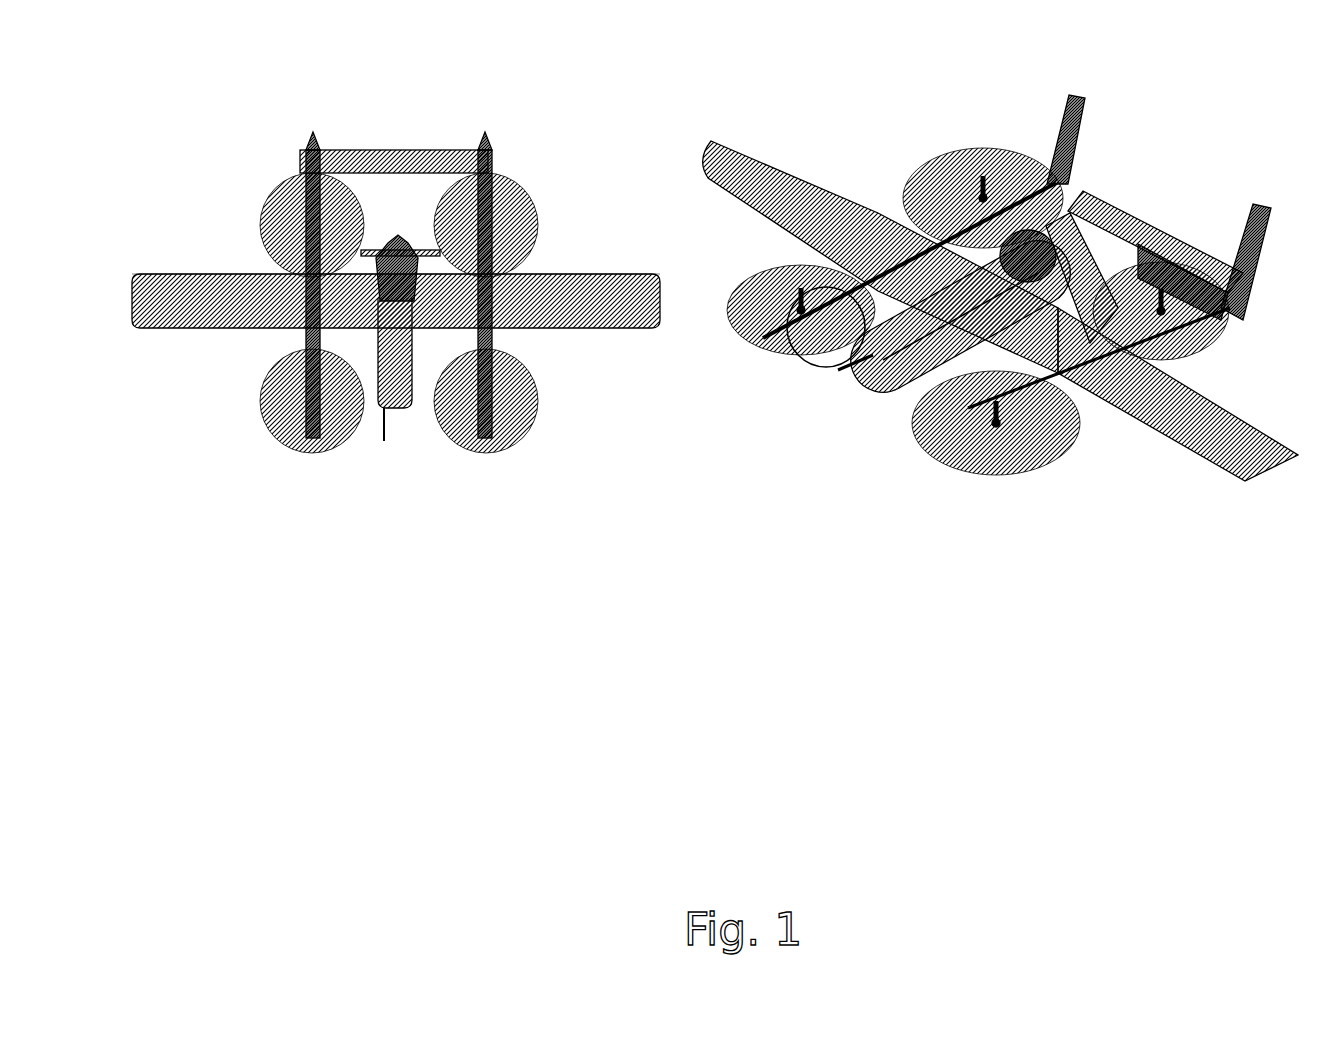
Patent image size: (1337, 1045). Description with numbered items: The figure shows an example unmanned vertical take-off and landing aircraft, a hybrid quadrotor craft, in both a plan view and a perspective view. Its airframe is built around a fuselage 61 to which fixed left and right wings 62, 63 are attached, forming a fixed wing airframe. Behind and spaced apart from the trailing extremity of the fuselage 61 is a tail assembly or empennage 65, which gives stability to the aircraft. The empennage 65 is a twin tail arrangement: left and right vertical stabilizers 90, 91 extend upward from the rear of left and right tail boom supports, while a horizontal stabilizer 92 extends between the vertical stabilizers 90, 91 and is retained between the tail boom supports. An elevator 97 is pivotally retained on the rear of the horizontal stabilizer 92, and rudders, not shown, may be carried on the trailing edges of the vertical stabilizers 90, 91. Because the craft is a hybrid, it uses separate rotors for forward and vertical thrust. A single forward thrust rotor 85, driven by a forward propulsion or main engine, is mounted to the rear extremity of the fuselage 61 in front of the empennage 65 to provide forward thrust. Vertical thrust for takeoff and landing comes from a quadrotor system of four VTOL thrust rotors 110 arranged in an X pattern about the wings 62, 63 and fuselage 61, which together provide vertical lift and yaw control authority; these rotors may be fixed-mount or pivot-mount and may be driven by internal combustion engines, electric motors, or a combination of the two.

The fuselage 61 is at (384, 401).
The left wing 62 is at (583, 281).
The right wing 63 is at (164, 277).
The empennage 65 is at (459, 94).
The forward thrust rotor 85 is at (374, 246).
The left vertical stabilizer 90 is at (1258, 199).
The right vertical stabilizer 91 is at (1079, 92).
The horizontal stabilizer 92 is at (362, 143).
The elevator 97 is at (1168, 225).
The VTOL thrust rotors 110 is at (275, 194).